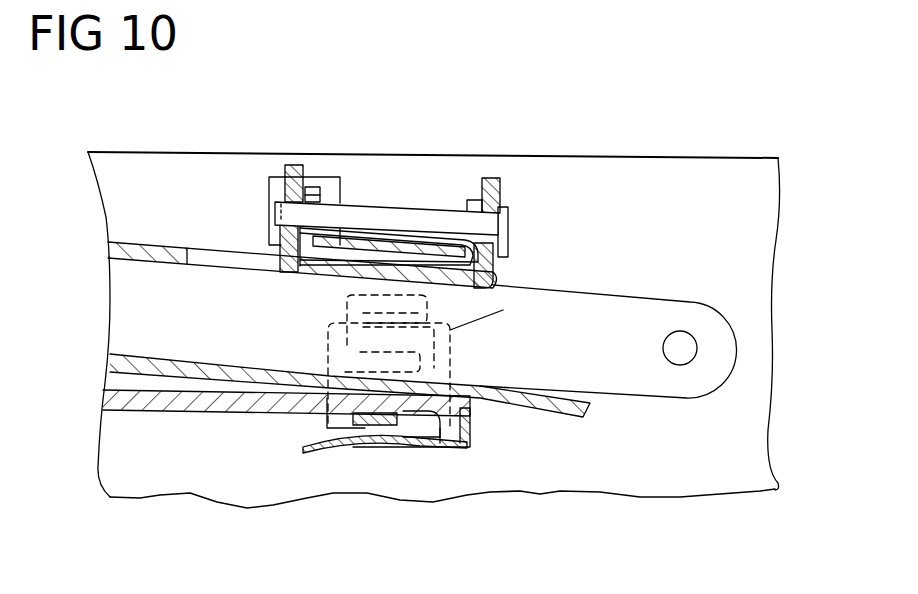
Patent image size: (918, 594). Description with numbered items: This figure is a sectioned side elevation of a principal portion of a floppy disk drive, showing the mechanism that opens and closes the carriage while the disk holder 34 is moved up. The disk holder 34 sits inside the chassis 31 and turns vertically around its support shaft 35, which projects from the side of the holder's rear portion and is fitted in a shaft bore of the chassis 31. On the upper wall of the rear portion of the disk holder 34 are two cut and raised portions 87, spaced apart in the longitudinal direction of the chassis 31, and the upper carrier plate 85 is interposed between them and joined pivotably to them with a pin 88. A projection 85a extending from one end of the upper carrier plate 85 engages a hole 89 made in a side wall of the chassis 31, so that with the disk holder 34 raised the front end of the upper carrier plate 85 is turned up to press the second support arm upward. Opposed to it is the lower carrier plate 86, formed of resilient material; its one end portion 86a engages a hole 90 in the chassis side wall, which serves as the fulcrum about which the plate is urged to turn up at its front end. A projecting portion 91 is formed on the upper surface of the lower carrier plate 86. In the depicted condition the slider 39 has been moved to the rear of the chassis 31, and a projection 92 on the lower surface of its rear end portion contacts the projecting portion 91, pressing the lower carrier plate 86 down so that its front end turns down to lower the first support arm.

The chassis 31 is at (685, 157).
The disk holder 34 is at (137, 258).
The support shaft 35 is at (697, 348).
The slider 39 is at (137, 412).
The upper carrier plate 85 is at (430, 243).
The projection 85a is at (325, 187).
The lower carrier plate 86 is at (457, 448).
The one end portion of the lower carrier plate 86a is at (345, 312).
The cut and raised portions 87 is at (289, 165).
The pin 88 is at (400, 210).
The hole 89 is at (268, 182).
The hole 90 is at (503, 310).
The projecting portion 91 is at (376, 428).
The projection 92 is at (357, 447).